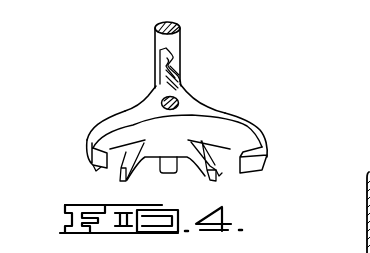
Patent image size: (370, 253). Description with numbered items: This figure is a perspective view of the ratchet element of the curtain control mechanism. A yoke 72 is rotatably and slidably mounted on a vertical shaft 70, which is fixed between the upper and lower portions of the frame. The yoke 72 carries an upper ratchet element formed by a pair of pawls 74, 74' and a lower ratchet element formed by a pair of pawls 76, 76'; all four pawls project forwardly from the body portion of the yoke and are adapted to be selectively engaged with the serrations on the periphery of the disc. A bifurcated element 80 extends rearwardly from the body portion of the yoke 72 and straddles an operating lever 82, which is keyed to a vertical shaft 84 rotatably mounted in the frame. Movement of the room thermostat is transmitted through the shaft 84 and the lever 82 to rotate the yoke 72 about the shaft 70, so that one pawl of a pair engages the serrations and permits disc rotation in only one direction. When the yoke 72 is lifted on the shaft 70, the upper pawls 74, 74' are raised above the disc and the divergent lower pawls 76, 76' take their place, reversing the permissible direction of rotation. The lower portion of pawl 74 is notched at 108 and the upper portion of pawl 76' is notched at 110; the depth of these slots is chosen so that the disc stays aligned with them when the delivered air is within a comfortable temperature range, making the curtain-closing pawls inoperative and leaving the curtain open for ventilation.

The shaft 70 is at (150, 100).
The yoke 72 is at (237, 114).
The pawl 74 is at (73, 152).
The pawl 74' is at (274, 155).
The pawl 76 is at (137, 170).
The pawl 76' is at (195, 170).
The bifurcated element 80 is at (178, 82).
The operating lever 82 is at (173, 58).
The vertical shaft 84 is at (182, 31).
The notch 108 is at (95, 170).
The notch 110 is at (220, 177).